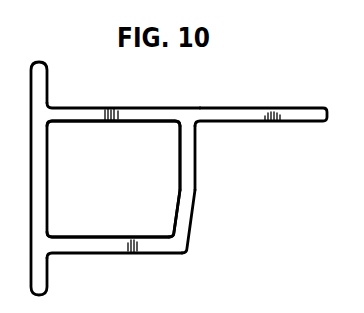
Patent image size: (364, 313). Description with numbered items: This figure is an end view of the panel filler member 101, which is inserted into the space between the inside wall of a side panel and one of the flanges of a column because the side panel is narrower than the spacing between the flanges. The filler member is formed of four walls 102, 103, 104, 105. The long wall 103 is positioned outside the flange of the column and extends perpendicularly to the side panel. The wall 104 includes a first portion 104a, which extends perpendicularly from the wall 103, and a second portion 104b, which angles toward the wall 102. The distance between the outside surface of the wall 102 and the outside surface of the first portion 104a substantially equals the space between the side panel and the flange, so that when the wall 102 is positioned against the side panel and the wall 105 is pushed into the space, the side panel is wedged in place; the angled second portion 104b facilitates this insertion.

The panel filler member 101 is at (287, 108).
The wall 102 is at (50, 272).
The long wall 103 is at (150, 110).
The wall 104 is at (182, 142).
The first portion of wall 104 104a is at (196, 170).
The second portion of wall 104 104b is at (191, 228).
The wall 105 is at (141, 254).